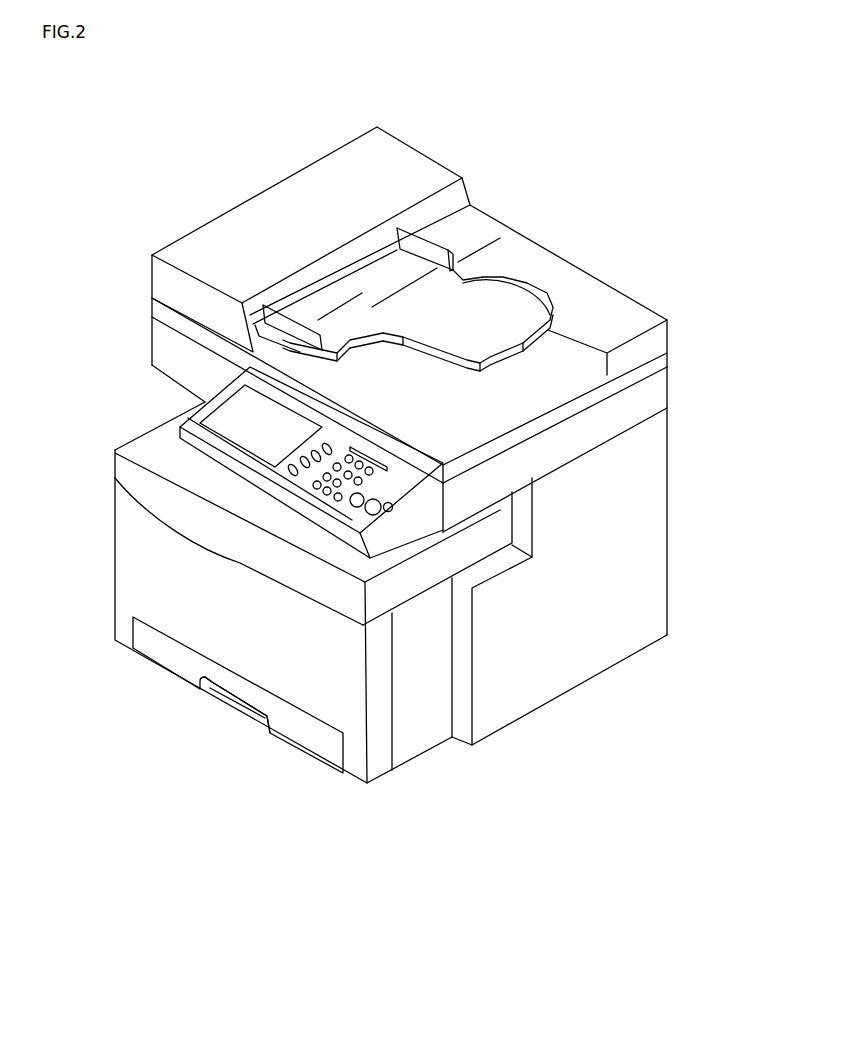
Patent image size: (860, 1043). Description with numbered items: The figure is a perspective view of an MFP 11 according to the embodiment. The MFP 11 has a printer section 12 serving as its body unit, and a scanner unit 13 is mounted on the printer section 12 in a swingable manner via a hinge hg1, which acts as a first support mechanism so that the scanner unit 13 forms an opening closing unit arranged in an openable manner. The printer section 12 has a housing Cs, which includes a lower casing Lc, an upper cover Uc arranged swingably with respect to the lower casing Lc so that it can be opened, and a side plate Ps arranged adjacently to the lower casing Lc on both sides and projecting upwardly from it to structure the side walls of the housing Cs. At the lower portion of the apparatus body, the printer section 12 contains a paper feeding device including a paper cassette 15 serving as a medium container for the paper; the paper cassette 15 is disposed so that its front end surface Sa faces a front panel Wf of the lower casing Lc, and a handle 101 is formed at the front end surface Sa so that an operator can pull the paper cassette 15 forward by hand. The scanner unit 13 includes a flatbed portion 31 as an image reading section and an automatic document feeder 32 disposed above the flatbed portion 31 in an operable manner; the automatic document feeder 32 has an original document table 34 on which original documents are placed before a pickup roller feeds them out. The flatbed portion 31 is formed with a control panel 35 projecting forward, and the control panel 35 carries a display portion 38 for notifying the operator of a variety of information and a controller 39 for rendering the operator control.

The MFP 11 is at (401, 133).
The printer section 12 is at (112, 608).
The scanner unit 13 is at (199, 248).
The paper cassette 15 is at (171, 664).
The flatbed portion 31 is at (657, 386).
The automatic document feeder 32 is at (538, 284).
The original document table 34 is at (497, 290).
The control panel 35 is at (185, 425).
The display portion 38 is at (228, 428).
The controller 39 is at (400, 487).
The handle 101 is at (235, 707).
The front panel Wf is at (129, 560).
The front end surface Sa is at (298, 728).
The lower casing Lc is at (348, 713).
The upper cover Uc is at (350, 575).
The side plate Ps is at (503, 693).
The housing Cs is at (390, 855).
The hinge hg1 is at (665, 410).